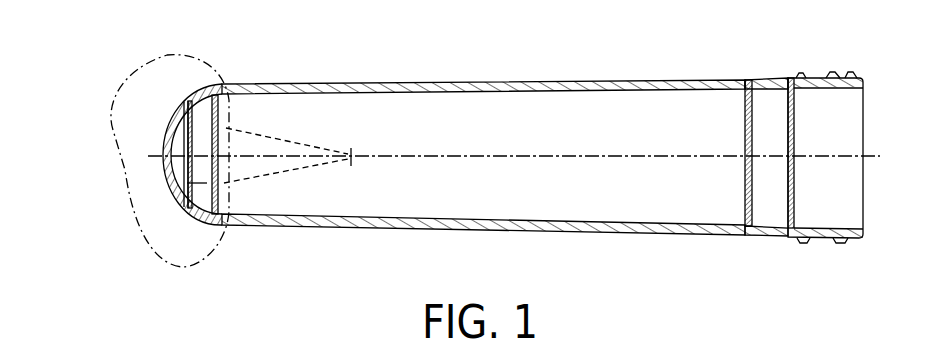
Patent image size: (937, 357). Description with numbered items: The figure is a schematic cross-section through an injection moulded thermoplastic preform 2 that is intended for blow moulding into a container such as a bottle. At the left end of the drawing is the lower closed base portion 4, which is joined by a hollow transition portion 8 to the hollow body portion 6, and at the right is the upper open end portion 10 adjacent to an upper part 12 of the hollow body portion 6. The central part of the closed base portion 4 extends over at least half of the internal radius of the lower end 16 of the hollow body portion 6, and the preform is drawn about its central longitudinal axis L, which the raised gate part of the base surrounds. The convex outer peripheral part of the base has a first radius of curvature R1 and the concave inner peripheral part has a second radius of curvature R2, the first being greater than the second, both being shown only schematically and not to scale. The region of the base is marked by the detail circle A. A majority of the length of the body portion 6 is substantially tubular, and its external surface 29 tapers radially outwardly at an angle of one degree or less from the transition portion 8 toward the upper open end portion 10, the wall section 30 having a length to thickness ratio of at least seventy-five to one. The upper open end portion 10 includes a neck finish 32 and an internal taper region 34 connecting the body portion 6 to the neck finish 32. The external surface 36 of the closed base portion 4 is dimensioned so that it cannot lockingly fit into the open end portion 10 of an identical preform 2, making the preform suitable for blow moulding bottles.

The preform 2 is at (542, 151).
The closed base portion 4 is at (187, 188).
The hollow body portion 6 is at (430, 232).
The hollow transition portion 8 is at (195, 222).
The upper open end portion 10 is at (805, 241).
The upper part of the hollow body portion 12 is at (716, 234).
The lower end of the hollow body portion 16 is at (229, 84).
The external surface of the body portion 29 is at (349, 82).
The wall section 30 is at (563, 81).
The neck finish 32 is at (825, 74).
The internal taper region 34 is at (764, 78).
The external surface of the closed base portion 36 is at (170, 124).
The detail region A is at (115, 146).
The central longitudinal axis L is at (582, 155).
The first radius of curvature R1 is at (286, 180).
The second radius of curvature R2 is at (287, 134).